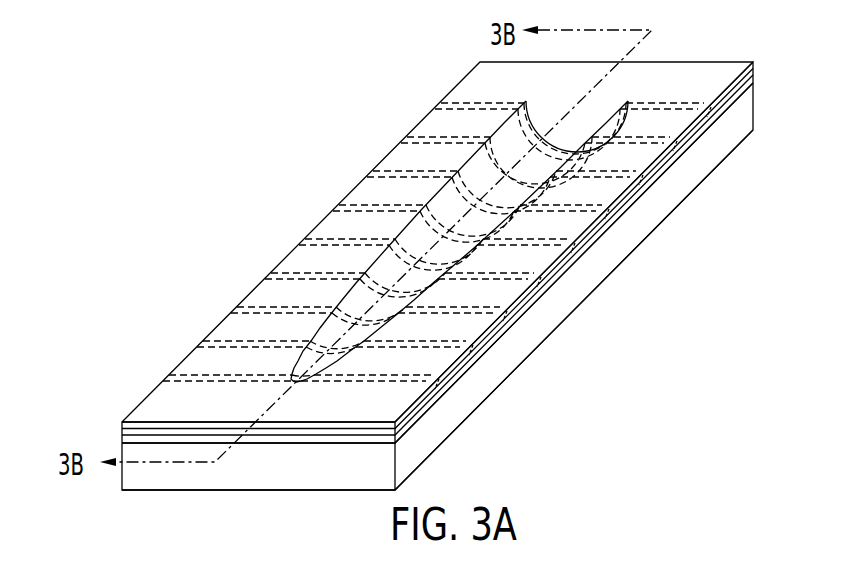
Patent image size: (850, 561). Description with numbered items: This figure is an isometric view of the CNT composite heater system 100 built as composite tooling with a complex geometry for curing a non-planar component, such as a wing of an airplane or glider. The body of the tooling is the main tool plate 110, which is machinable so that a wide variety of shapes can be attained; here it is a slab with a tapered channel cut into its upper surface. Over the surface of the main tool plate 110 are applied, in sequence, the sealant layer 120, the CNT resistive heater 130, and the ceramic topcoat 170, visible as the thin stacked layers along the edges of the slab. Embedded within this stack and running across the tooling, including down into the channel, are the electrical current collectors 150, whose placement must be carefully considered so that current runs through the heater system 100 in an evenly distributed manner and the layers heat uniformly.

The CNT composite heater system 100 is at (190, 238).
The main tool plate 110 is at (720, 135).
The sealant layer 120 is at (755, 92).
The CNT resistive heater 130 is at (672, 168).
The electrical current collectors 150 is at (518, 102).
The ceramic topcoat 170 is at (603, 228).